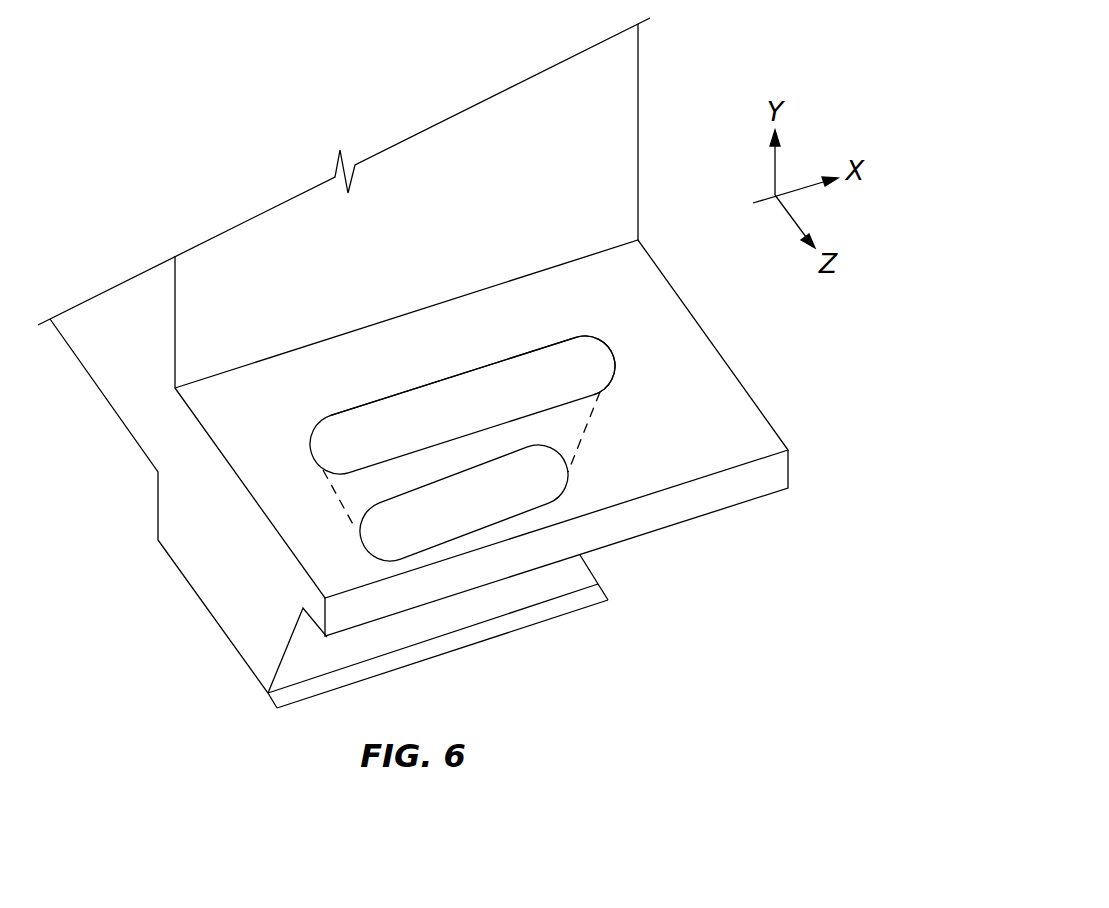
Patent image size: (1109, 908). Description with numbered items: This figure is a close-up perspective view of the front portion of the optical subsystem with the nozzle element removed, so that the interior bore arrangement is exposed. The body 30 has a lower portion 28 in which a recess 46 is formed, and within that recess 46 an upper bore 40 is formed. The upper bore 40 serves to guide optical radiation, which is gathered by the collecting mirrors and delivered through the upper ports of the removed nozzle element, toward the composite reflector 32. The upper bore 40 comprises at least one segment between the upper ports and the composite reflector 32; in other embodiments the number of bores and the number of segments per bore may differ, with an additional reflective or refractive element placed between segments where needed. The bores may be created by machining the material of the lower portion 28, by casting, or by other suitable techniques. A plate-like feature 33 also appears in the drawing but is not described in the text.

The lower portion 28 is at (227, 590).
The body 30 is at (623, 115).
The composite reflector 32 is at (597, 595).
The mounting plate 33 is at (780, 470).
The upper bore 40 is at (377, 428).
The recess 46 is at (572, 337).